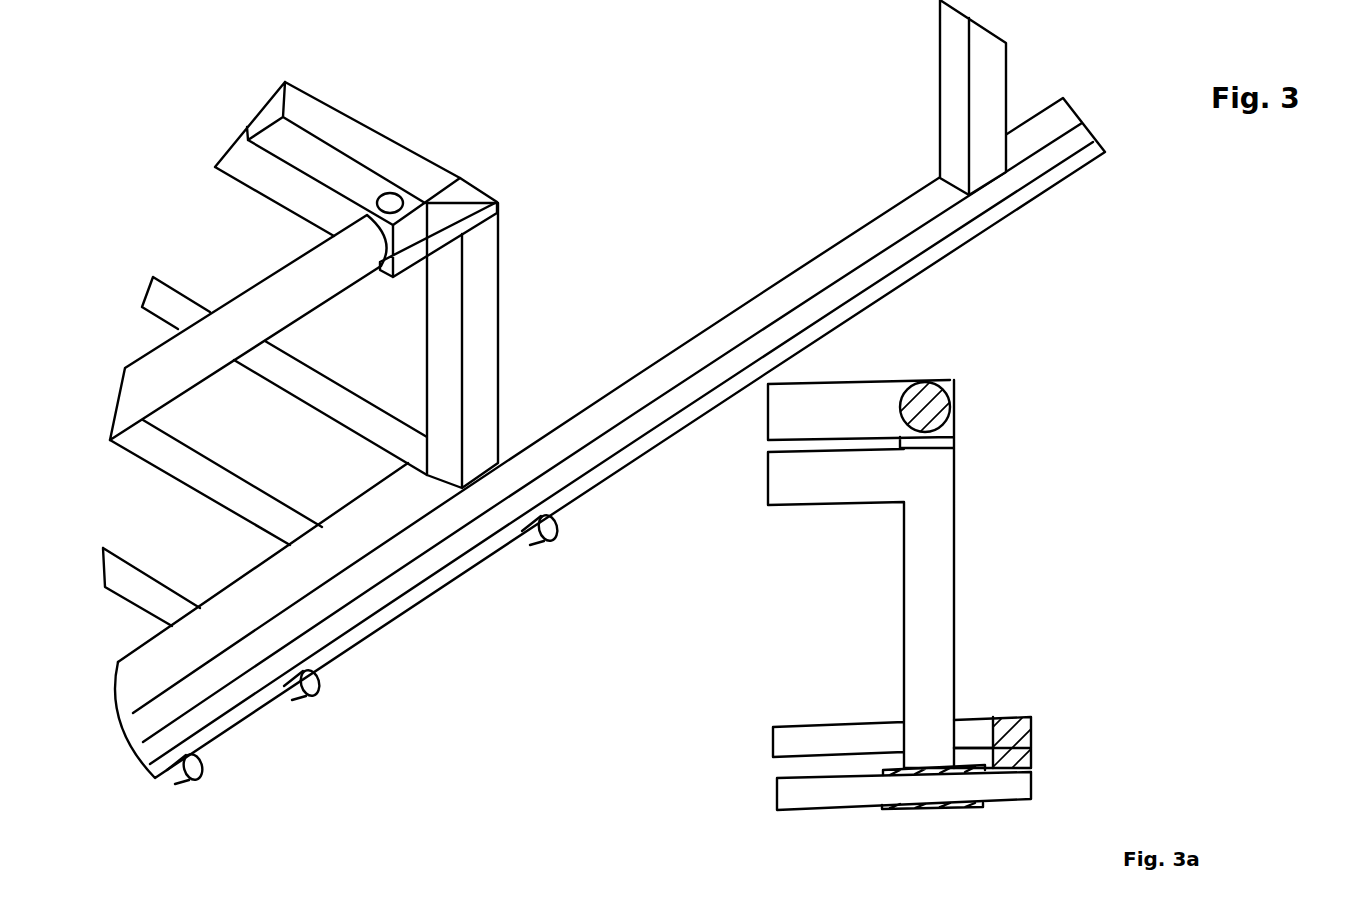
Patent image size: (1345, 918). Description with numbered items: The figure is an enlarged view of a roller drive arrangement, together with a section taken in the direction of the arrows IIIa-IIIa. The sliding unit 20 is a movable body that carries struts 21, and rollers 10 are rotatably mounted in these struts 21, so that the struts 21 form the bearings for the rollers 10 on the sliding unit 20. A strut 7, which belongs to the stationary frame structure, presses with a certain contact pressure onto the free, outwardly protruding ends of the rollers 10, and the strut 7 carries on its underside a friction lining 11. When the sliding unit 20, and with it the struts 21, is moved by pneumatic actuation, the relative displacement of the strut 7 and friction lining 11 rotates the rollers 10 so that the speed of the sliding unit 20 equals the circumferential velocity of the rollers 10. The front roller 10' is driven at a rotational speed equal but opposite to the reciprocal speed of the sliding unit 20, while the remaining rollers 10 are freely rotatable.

In FIG. 3, the sliding unit 20 is at (455, 152).
In FIG. 3, the strut 7 is at (405, 545).
In FIG. 3A, the strut 7 is at (1031, 716).
In FIG. 3, the roller 10 is at (283, 742).
In FIG. 3A, the roller 10 is at (837, 796).
In FIG. 3, the front roller 10' is at (569, 620).
In FIG. 3, the strut 21 is at (195, 640).
In FIG. 3A, the strut 21 is at (888, 768).
In FIG. 3A, the friction lining 11 is at (1035, 757).
In FIG. 3, the section line IIIa is at (395, 383).